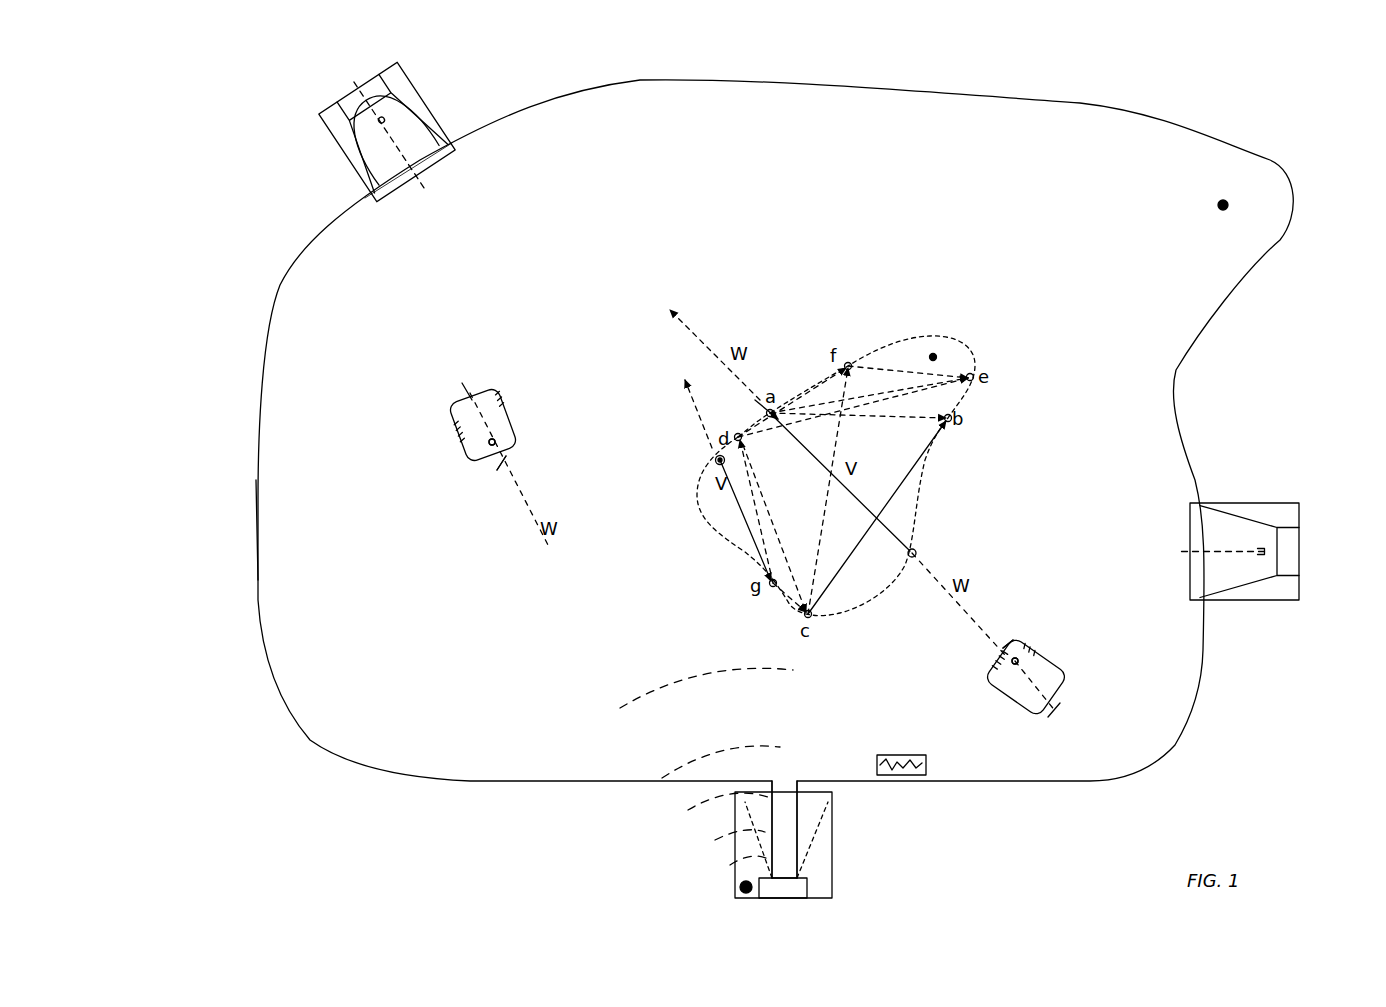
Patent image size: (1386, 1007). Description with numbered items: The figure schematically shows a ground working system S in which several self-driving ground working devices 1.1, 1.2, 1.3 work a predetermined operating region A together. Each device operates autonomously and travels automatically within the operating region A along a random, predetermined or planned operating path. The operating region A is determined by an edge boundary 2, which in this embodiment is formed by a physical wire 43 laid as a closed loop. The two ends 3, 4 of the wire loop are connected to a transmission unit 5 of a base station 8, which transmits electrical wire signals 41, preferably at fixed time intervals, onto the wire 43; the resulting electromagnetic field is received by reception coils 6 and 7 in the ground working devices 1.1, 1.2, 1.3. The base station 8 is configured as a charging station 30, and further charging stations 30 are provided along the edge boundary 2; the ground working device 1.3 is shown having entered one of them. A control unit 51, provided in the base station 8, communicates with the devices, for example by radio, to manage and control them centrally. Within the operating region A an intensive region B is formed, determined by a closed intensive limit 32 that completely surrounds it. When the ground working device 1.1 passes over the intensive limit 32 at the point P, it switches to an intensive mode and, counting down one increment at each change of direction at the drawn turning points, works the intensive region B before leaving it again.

The edge boundary 2 is at (255, 580).
The wire 43 is at (255, 530).
The charging station 30 is at (366, 96).
The ground working device 1.1 is at (1052, 675).
The ground working device 1.2 is at (458, 412).
The ground working device 1.3 is at (418, 147).
The reception coil 6 is at (492, 462).
The reception coil 7 is at (520, 455).
The base station 8 is at (782, 800).
The intensive limit 32 is at (905, 332).
The wire signals 41 is at (925, 756).
The control unit 51 is at (738, 893).
The transmission unit 5 is at (757, 890).
The end of the wire loop 3 is at (770, 890).
The end of the wire loop 4 is at (800, 882).
The ground working system S is at (770, 228).
The operating region A is at (1228, 200).
The intensive region B is at (935, 353).
The point P is at (903, 562).